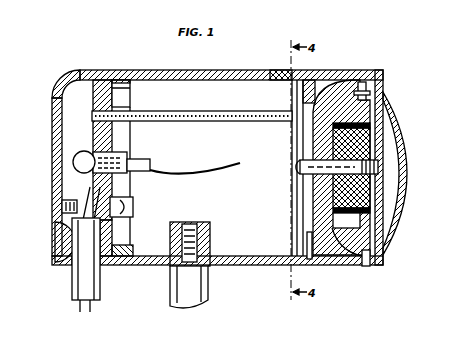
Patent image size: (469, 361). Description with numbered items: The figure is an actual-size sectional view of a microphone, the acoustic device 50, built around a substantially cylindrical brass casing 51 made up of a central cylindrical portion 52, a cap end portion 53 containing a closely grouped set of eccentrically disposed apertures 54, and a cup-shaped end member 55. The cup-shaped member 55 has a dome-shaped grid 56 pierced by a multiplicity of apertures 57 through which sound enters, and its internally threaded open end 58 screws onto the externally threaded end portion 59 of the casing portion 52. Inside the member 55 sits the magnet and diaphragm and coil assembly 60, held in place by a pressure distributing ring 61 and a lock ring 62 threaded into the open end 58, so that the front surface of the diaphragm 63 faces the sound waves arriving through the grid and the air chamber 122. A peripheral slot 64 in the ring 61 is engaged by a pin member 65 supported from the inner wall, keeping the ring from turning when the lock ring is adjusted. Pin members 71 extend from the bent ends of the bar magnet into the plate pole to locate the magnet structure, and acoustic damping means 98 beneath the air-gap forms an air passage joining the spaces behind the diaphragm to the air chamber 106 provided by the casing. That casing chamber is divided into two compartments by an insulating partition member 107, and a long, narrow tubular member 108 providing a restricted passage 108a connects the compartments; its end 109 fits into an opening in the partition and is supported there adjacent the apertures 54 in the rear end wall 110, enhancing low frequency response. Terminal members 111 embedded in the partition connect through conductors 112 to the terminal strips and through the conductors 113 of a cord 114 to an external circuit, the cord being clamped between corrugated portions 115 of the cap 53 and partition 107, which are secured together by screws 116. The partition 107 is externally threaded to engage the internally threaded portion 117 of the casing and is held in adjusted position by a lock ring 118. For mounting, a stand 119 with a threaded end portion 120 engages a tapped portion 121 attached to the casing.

The acoustic device 50 is at (383, 78).
The casing 51 is at (240, 71).
The central cylindrical portion 52 is at (205, 71).
The cap end portion 53 is at (80, 72).
The apertures 54 is at (53, 123).
The cup-shaped end member 55 is at (322, 75).
The grid 56 is at (388, 96).
The apertures 57 is at (402, 150).
The open end 58 is at (283, 72).
The externally threaded end portion 59 is at (290, 82).
The magnet and diaphragm and coil assembly 60 is at (353, 262).
The pressure distributing ring 61 is at (294, 250).
The lock ring 62 is at (300, 253).
The diaphragm 63 is at (398, 203).
The peripheral slot 64 is at (334, 263).
The pin member 65 is at (314, 264).
The pin members 71 is at (362, 84).
The acoustic damping means 98 is at (313, 217).
The air chamber 106 is at (195, 179).
The partition member 107 is at (131, 97).
The tubular member 108 is at (173, 122).
The restricted passage 108a is at (227, 122).
The end of tubular member 109 is at (92, 110).
The rear end wall 110 is at (55, 170).
The terminal members 111 is at (128, 156).
The conductors 112 is at (213, 168).
The conductors 113 is at (66, 224).
The cord 114 is at (100, 281).
The corrugated portions 115 is at (60, 253).
The screws 116 is at (62, 200).
The internally threaded portion 117 is at (124, 80).
The lock ring 118 is at (130, 252).
The stand 119 is at (206, 292).
The threaded end portion 120 is at (197, 247).
The tapped portion 121 is at (196, 224).
The air chamber 122 is at (393, 173).